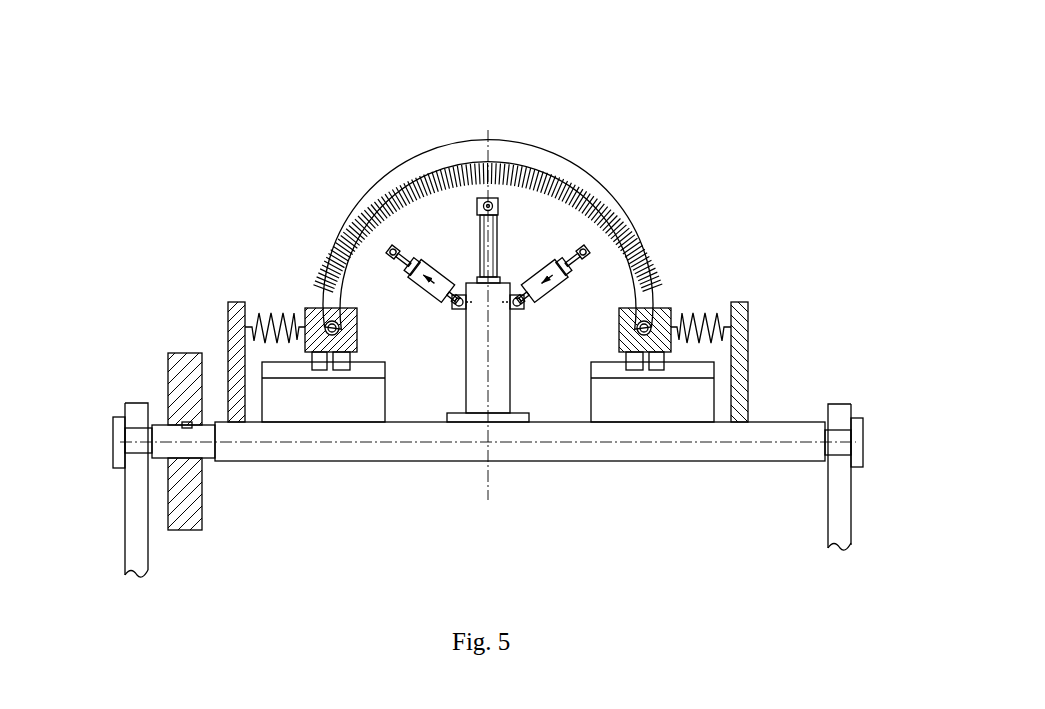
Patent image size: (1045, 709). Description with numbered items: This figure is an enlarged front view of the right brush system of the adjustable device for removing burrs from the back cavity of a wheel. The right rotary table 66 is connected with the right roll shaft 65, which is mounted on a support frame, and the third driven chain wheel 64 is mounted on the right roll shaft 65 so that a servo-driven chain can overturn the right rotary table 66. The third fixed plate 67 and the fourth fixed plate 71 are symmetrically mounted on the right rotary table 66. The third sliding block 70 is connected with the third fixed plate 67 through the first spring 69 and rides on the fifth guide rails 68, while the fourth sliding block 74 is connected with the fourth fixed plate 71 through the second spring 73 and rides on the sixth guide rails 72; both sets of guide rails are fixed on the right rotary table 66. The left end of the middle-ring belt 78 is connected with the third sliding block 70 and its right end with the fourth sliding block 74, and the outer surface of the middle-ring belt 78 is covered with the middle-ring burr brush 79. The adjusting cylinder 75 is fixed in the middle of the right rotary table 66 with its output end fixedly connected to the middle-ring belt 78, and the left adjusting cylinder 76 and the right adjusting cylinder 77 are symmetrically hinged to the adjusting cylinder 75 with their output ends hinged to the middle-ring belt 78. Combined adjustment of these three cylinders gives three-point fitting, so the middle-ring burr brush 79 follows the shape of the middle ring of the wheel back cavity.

The third driven chain wheel 64 is at (180, 495).
The right roll shaft 65 is at (165, 433).
The right rotary table 66 is at (228, 435).
The third fixed plate 67 is at (232, 395).
The fifth guide rails 68 is at (263, 369).
The first spring 69 is at (267, 322).
The third sliding block 70 is at (312, 315).
The fourth fixed plate 71 is at (750, 388).
The sixth guide rails 72 is at (707, 367).
The second spring 73 is at (715, 323).
The fourth sliding block 74 is at (667, 317).
The adjusting cylinder 75 is at (500, 355).
The left adjusting cylinder 76 is at (357, 252).
The right adjusting cylinder 77 is at (622, 252).
The middle-ring belt 78 is at (402, 223).
The middle-ring burr brush 79 is at (488, 164).